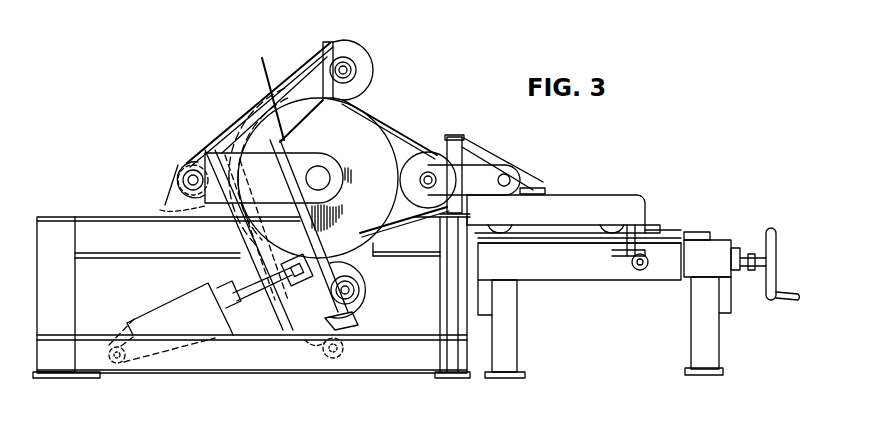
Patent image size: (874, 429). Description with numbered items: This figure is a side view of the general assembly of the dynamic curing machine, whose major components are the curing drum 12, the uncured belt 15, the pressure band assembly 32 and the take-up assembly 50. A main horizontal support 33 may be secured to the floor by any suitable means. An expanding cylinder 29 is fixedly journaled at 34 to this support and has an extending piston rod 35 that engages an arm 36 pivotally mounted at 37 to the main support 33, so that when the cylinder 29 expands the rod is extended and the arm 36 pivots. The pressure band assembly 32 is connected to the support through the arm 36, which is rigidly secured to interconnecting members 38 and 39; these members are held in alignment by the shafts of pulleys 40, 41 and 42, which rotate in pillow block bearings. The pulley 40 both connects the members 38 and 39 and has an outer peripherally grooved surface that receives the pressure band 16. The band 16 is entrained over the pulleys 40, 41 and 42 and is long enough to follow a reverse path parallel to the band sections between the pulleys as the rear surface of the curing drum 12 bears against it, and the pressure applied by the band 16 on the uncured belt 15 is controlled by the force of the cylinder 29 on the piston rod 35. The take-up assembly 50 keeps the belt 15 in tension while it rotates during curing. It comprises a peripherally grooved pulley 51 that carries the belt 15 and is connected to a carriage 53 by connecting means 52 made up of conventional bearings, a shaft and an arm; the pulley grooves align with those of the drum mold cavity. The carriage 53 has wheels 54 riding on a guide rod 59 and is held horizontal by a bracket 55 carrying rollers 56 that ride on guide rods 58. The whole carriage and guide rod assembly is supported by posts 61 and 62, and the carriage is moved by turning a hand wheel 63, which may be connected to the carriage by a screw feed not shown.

The curing drum 12 is at (358, 125).
The uncured belt 15 is at (410, 132).
The pressure band 16 is at (252, 98).
The expanding cylinder 29 is at (168, 305).
The pressure band assembly 32 is at (272, 83).
The main horizontal support 33 is at (383, 364).
The journal of cylinder 34 is at (118, 365).
The piston rod 35 is at (245, 305).
The arm 36 is at (302, 233).
The pivot mounting of arm 37 is at (330, 362).
The interconnecting member 38 is at (313, 115).
The interconnecting member 39 is at (240, 232).
The pulley 40 is at (176, 170).
The pulley 41 is at (357, 50).
The pulley 42 is at (362, 289).
The take-up assembly 50 is at (540, 214).
The peripherally grooved pulley 51 is at (430, 160).
The connecting means 52 is at (492, 172).
The carriage 53 is at (590, 200).
The wheels 54 is at (510, 236).
The bracket 55 is at (630, 268).
The rollers 56 is at (643, 272).
The guide rods 58 is at (578, 280).
The guide rod 59 is at (548, 242).
The post 61 is at (506, 370).
The post 62 is at (694, 335).
The hand wheel 63 is at (772, 232).